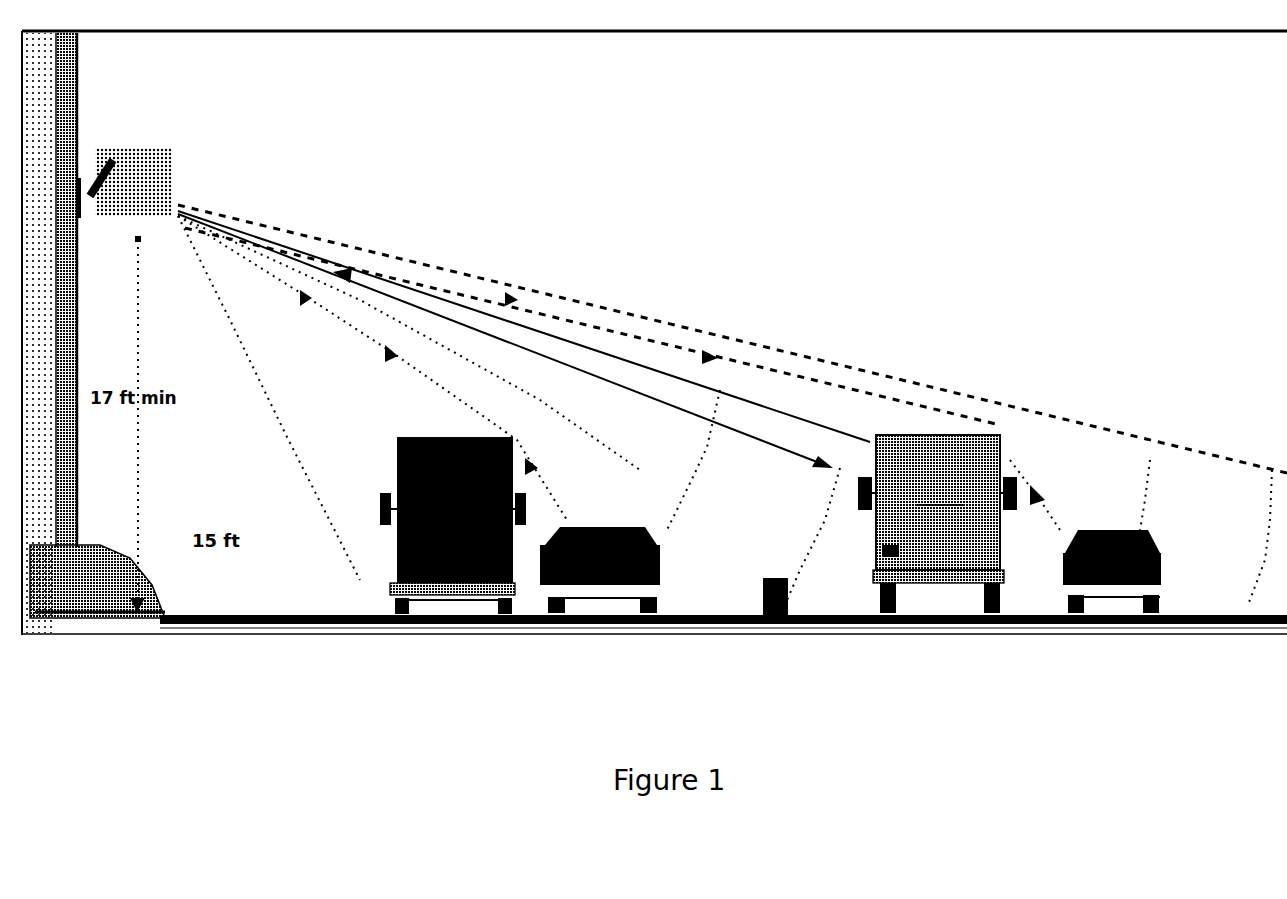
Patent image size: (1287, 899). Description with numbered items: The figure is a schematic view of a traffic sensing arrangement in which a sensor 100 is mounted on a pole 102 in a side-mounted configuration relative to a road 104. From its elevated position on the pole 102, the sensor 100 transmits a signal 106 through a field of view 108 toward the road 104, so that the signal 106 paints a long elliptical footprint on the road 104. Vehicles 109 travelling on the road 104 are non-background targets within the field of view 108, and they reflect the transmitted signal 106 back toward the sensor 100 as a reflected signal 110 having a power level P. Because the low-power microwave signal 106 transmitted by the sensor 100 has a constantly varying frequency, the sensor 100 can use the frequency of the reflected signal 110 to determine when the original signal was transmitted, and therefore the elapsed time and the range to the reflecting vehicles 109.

The sensor 100 is at (143, 165).
The pole 102 is at (79, 68).
The road 104 is at (1195, 636).
The signal 106 is at (505, 347).
The field of view 108 is at (695, 460).
The reflected signal 110 is at (732, 339).
The vehicles 109 is at (585, 592).